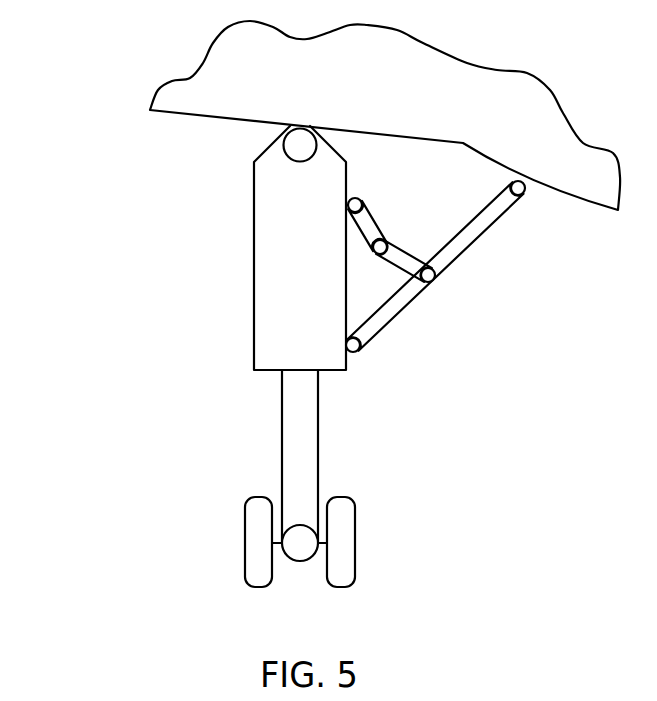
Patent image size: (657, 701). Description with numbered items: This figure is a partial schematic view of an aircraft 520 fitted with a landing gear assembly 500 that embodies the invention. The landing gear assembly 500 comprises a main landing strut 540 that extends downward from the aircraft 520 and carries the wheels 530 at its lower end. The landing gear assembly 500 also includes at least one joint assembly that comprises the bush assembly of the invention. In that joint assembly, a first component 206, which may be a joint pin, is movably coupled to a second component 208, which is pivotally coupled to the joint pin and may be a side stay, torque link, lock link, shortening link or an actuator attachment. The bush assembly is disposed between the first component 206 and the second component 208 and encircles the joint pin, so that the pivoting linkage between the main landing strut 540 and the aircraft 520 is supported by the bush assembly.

The landing gear assembly 500 is at (286, 356).
The aircraft 520 is at (190, 100).
The main landing strut 540 is at (255, 290).
The wheels 530 is at (229, 554).
The first component 206 is at (433, 285).
The second component 208 is at (492, 228).